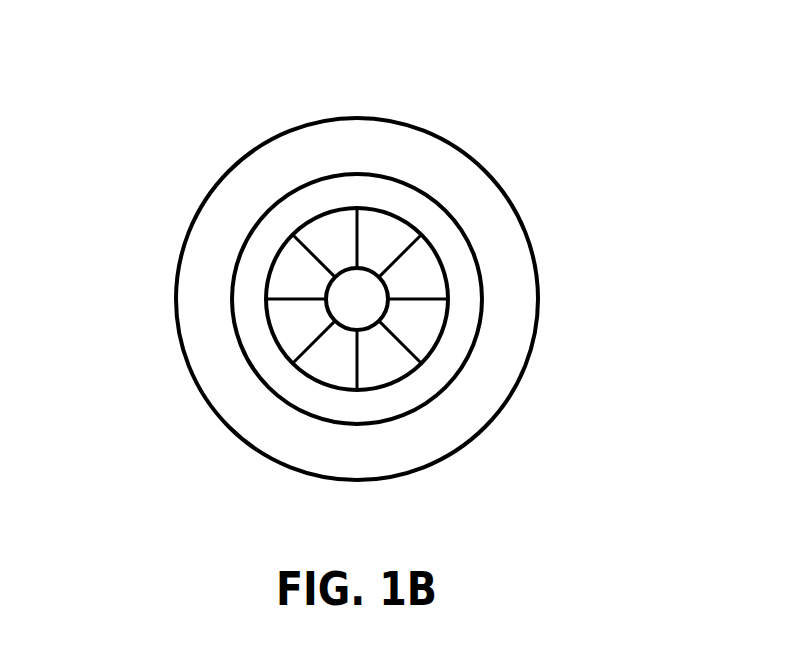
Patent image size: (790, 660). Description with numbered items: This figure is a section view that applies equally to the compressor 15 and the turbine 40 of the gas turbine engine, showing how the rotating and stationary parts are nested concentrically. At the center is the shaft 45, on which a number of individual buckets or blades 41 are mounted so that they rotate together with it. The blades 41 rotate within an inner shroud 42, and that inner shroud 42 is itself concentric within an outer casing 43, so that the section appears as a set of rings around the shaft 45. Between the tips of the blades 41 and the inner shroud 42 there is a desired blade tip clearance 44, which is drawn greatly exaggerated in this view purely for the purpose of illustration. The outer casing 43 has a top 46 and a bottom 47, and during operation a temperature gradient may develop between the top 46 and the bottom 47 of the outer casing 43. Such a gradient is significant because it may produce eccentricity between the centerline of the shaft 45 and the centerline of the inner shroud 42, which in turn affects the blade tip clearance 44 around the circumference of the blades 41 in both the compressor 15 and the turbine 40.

The compressor 15 is at (339, 290).
The turbine 40 is at (143, 132).
The blades 41 is at (410, 300).
The inner shroud 42 is at (286, 195).
The outer casing 43 is at (513, 202).
The blade tip clearance 44 is at (394, 216).
The shaft 45 is at (350, 307).
The top 46 is at (361, 117).
The bottom 47 is at (358, 479).